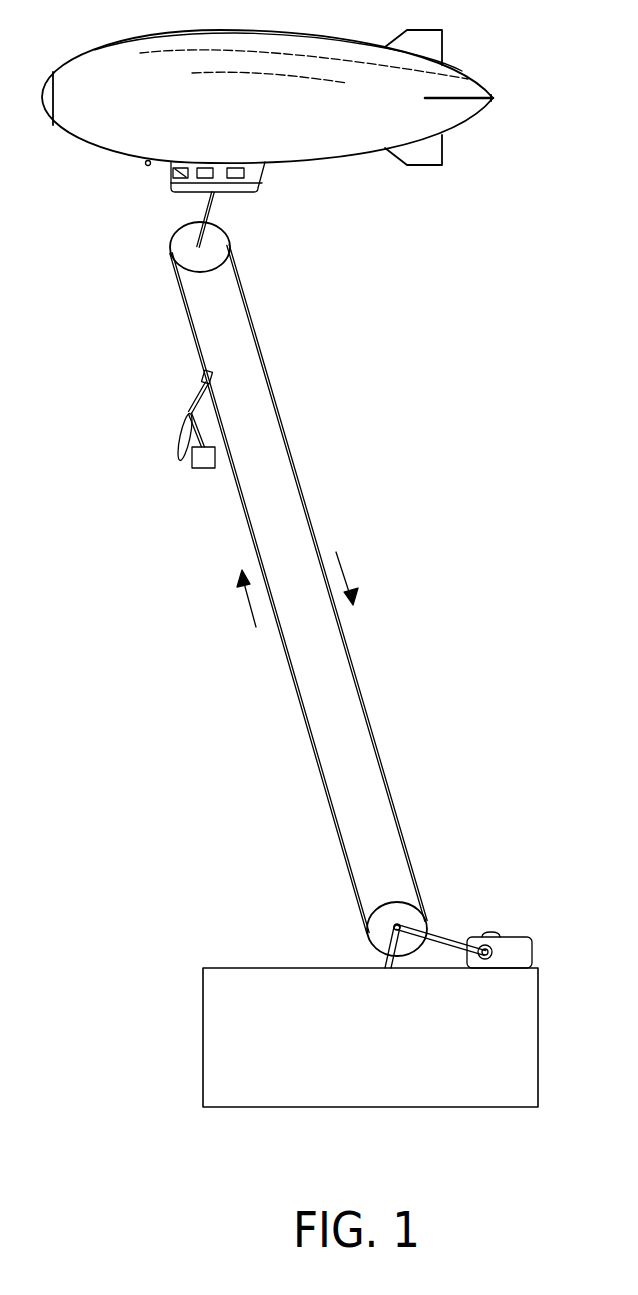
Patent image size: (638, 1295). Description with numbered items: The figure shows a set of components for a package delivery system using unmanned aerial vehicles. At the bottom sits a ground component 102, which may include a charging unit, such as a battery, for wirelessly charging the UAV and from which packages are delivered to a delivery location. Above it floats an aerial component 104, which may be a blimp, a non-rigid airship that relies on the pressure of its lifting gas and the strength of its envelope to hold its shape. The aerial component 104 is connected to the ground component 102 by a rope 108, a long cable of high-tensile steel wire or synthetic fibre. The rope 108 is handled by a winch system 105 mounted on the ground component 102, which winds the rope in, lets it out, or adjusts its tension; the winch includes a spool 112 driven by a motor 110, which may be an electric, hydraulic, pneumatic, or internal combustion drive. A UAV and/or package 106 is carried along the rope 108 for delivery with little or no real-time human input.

The ground component 102 is at (287, 968).
The aerial component 104 is at (257, 32).
The winch system 105 is at (373, 562).
The UAV and/or package 106 is at (180, 432).
The rope 108 is at (302, 487).
The motor 110 is at (508, 937).
The spool 112 is at (367, 922).